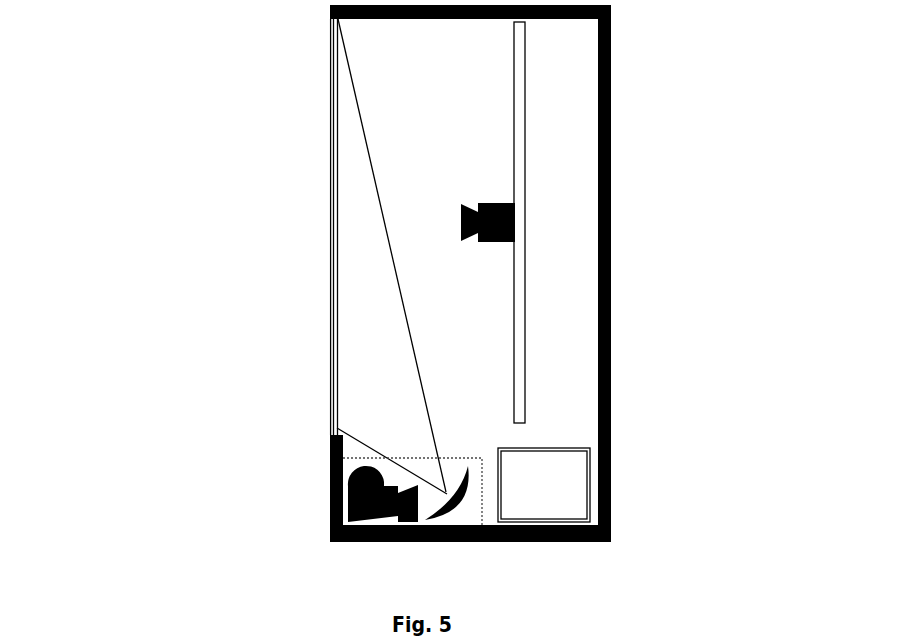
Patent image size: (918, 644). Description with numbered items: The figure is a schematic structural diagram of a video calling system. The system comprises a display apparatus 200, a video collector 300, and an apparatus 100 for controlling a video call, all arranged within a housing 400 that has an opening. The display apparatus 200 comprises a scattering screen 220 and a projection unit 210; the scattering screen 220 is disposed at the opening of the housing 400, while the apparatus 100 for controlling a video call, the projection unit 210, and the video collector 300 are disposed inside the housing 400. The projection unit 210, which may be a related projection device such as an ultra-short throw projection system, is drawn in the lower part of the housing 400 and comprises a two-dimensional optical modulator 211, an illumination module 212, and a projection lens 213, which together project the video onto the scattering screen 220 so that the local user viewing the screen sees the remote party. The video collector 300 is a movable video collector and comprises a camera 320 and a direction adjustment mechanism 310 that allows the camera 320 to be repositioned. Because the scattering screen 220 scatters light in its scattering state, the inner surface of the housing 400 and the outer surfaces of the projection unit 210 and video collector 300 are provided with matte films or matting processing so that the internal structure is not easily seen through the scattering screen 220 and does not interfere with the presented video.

The apparatus for controlling a video call 100 is at (590, 490).
The display apparatus 200 is at (120, 160).
The projection unit 210 is at (197, 388).
The two-dimensional optical modulator 211 is at (347, 500).
The illumination module 212 is at (343, 458).
The projection lens 213 is at (458, 482).
The scattering screen 220 is at (330, 185).
The video collector 300 is at (728, 90).
The direction adjustment mechanism 310 is at (520, 133).
The camera 320 is at (487, 212).
The housing 400 is at (612, 318).